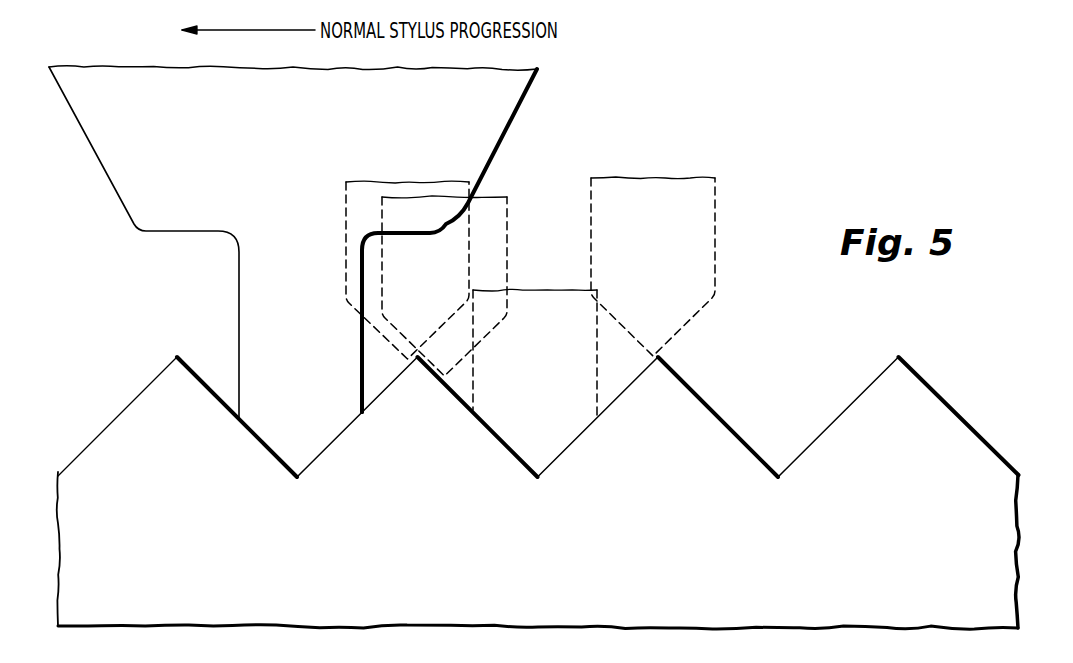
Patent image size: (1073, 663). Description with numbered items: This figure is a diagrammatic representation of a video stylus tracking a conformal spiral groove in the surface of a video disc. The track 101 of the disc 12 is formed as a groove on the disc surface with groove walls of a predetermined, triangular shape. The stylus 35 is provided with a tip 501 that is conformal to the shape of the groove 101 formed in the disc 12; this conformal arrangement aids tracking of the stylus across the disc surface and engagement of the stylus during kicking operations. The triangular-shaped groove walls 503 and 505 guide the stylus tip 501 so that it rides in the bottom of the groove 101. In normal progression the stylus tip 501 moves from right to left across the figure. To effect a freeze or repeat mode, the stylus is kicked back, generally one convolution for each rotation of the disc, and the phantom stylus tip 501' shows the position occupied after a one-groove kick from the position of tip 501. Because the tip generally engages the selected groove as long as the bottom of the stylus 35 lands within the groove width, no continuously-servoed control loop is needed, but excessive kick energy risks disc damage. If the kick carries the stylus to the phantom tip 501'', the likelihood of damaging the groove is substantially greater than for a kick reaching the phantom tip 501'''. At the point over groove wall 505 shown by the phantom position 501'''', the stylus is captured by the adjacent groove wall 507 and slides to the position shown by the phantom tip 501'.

The stylus 35 is at (128, 189).
The disc 12 is at (998, 559).
The track 101 is at (803, 449).
The stylus tip 501 is at (357, 418).
The phantom stylus tip 501' is at (538, 417).
The phantom stylus tip 501'' is at (679, 266).
The phantom stylus tip 501''' is at (478, 277).
The phantom stylus tip 501'''' is at (380, 265).
The groove wall 503 is at (263, 447).
The groove wall 505 is at (370, 402).
The adjacent groove wall 507 is at (462, 404).